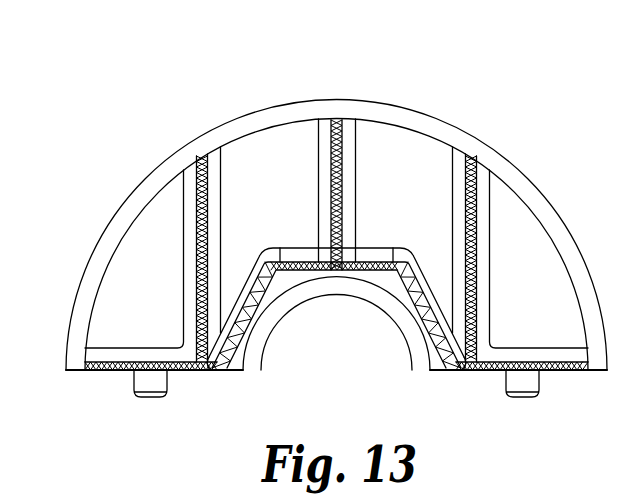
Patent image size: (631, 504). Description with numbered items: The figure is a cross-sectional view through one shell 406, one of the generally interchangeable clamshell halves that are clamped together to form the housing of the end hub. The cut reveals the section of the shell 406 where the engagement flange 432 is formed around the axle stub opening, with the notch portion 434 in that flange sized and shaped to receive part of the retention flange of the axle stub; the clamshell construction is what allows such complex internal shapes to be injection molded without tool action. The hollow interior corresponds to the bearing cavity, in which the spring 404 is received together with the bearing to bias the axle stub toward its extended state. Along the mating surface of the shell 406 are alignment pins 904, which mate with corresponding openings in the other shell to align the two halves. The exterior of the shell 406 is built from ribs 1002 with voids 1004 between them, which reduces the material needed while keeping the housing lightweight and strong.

The shell 406 is at (383, 115).
The rib 1002 is at (336, 126).
The void 1004 is at (400, 172).
The spring 404 is at (403, 283).
The engagement flange 432 is at (237, 362).
The notch portion 434 is at (421, 352).
The alignment pin 904 is at (138, 380).